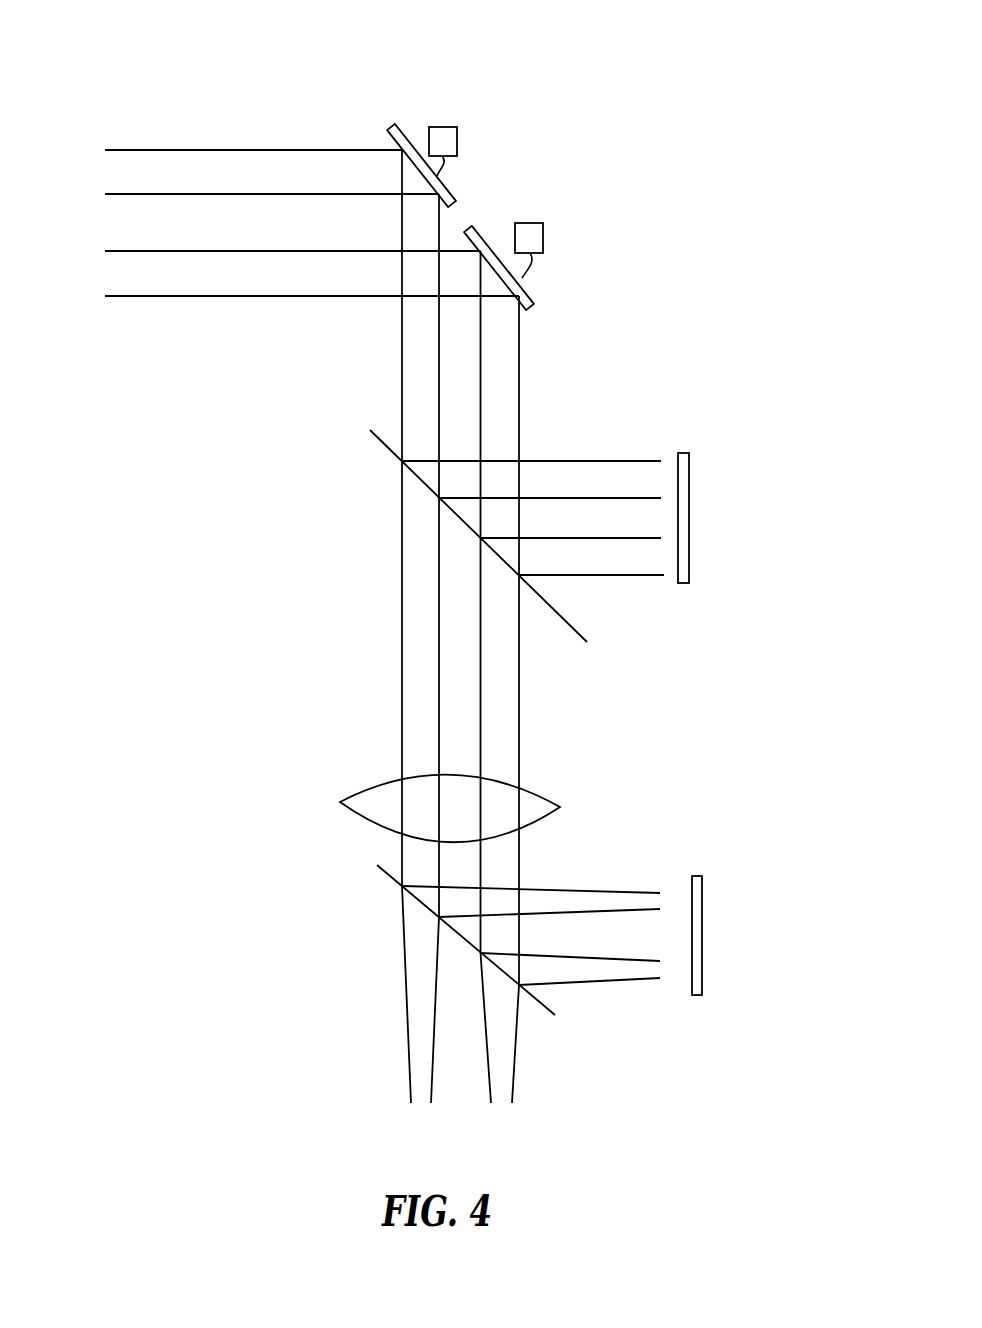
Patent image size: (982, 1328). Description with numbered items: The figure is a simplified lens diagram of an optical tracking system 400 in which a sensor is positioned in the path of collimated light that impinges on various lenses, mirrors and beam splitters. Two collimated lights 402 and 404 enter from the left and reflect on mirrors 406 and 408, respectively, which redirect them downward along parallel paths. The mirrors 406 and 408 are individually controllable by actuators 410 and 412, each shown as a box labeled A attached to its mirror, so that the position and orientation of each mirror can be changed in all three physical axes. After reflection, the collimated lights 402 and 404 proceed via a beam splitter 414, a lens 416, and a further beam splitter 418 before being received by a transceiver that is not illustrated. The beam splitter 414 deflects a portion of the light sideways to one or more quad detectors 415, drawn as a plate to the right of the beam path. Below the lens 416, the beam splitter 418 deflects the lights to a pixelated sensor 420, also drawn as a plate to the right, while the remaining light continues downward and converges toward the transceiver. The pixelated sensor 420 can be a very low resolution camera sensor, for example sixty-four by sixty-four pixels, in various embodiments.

The system 400 is at (684, 89).
The collimated light 402 is at (252, 172).
The collimated light 404 is at (292, 273).
The mirror 406 is at (397, 122).
The mirror 408 is at (483, 225).
The actuator 410 is at (457, 137).
The actuator 412 is at (543, 236).
The beam splitter 414 is at (580, 632).
The quad detector 415 is at (689, 517).
The lens 416 is at (545, 798).
The beam splitter 418 is at (545, 1003).
The pixelated sensor 420 is at (702, 930).